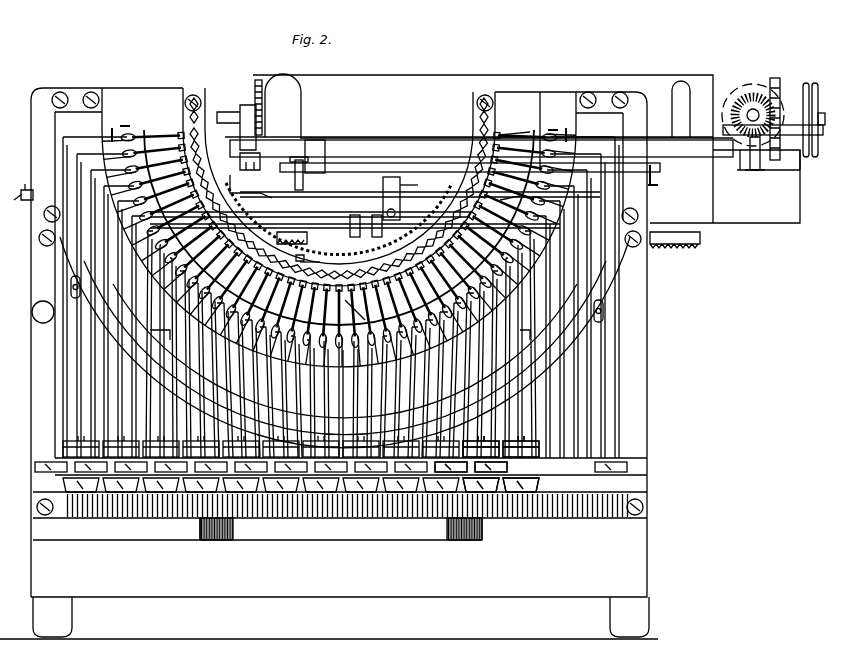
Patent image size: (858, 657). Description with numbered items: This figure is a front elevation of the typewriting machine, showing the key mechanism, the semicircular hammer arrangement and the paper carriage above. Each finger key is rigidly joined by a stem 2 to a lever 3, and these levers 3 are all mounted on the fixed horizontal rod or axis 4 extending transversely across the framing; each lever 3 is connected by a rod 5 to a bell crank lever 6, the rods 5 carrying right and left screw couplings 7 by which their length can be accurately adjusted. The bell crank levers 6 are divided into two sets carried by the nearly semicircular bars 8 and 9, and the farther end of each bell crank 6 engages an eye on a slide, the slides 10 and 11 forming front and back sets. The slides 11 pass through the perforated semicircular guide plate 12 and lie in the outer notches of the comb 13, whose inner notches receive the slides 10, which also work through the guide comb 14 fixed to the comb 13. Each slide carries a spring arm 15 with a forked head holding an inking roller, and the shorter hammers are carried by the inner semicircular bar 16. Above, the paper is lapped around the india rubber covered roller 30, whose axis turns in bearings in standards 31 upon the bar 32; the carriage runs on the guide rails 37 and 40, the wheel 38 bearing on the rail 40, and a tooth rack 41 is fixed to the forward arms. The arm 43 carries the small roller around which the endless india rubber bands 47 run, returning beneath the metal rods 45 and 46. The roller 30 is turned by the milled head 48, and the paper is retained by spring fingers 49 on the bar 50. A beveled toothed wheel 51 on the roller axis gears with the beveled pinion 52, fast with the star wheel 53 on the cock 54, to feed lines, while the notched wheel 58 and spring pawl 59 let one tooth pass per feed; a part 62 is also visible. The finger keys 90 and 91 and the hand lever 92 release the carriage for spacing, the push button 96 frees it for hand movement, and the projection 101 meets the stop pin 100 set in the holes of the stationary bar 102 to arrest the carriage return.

The stems 2 is at (347, 505).
The levers 3 is at (218, 538).
The horizontal rod or axis 4 is at (355, 309).
The rod 5 is at (70, 408).
The bell crank lever 6 is at (63, 146).
The right and left screw couplings 7 is at (70, 286).
The nearly semicircular bar 8 is at (161, 345).
The nearly semicircular bar 9 is at (532, 343).
The slides 10 is at (164, 128).
The slides 11 is at (511, 168).
The semicircular guide plate 12 is at (335, 195).
The comb 13 is at (339, 238).
The guide comb 14 is at (339, 226).
The spring arm 15 is at (340, 199).
The semicircular bar 16 is at (324, 257).
The india rubber covered roller 30 is at (469, 106).
The standards 31 is at (250, 112).
The bar 32 is at (772, 178).
The bar or rail 37 is at (140, 181).
The wheel 38 is at (418, 185).
The bar or guide rail 40 is at (440, 217).
The tooth rack 41 is at (488, 238).
The arm 43 is at (394, 191).
The metal rod 45 is at (481, 147).
The metal rod 46 is at (674, 187).
The endless india rubber bands 47 is at (316, 156).
The milled head 48 is at (818, 108).
The spring fingers 49 is at (477, 105).
The bar 50 is at (395, 128).
The beveled toothed wheel 51 is at (780, 86).
The beveled pinion 52 is at (757, 86).
The star wheel 53 is at (749, 109).
The cock 54 is at (755, 173).
The notched wheel 58 is at (256, 78).
The spring pawl 59 is at (240, 155).
The guide 62 is at (309, 253).
The finger key 90 is at (340, 496).
The finger key 91 is at (332, 464).
The hand lever 92 is at (341, 529).
The push button 96 is at (43, 322).
The stop pin 100 is at (386, 230).
The projection 101 is at (354, 230).
The stationary bar 102 is at (355, 223).